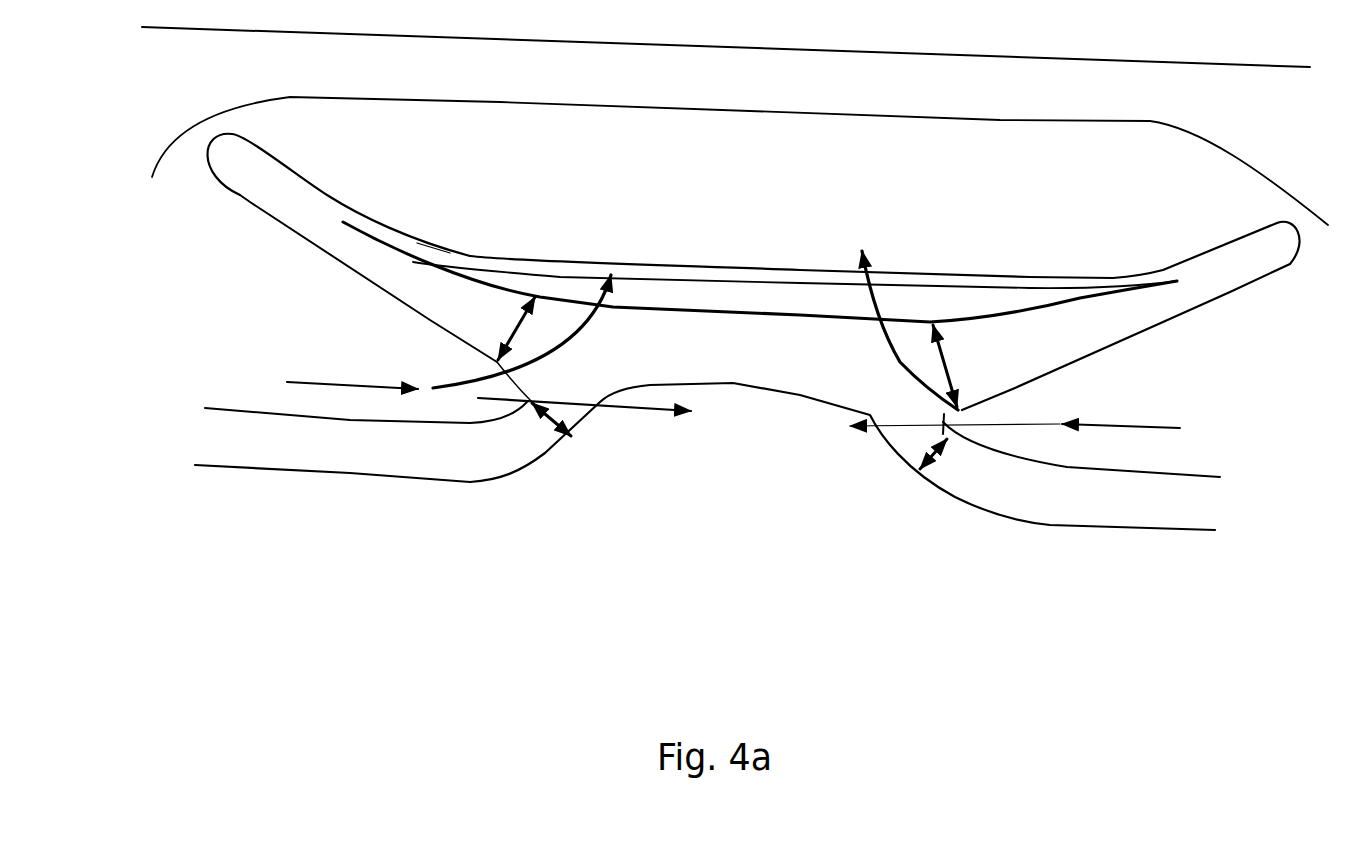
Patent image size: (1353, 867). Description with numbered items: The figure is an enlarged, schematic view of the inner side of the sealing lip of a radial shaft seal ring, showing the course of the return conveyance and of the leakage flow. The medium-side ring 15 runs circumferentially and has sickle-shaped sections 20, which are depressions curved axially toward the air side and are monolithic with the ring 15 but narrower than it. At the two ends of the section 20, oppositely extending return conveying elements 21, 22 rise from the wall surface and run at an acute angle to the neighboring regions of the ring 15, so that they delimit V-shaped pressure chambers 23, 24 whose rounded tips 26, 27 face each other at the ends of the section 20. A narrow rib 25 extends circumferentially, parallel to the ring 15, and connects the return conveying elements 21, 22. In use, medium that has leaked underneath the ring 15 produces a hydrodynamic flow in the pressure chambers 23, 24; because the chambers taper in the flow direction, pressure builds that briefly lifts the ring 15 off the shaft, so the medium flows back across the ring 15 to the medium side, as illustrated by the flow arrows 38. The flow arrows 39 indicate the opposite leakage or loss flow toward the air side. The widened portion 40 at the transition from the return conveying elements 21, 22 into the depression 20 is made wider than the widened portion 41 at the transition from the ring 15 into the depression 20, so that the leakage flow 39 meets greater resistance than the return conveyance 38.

The first circumferentially extending ring 15 is at (287, 447).
The section of the ring 20 is at (767, 365).
The return conveying element 21 is at (250, 185).
The return conveying element 22 is at (1210, 290).
The pressure chamber 23 is at (325, 332).
The pressure chamber 24 is at (1040, 432).
The rib 25 is at (690, 272).
The rounded tip of pressure chamber 26 is at (530, 391).
The rounded tip of pressure chamber 27 is at (942, 427).
The flow arrows 38 is at (633, 408).
The flow arrows 39 is at (563, 327).
The widened portion 40 is at (525, 345).
The widened portion 41 is at (530, 402).